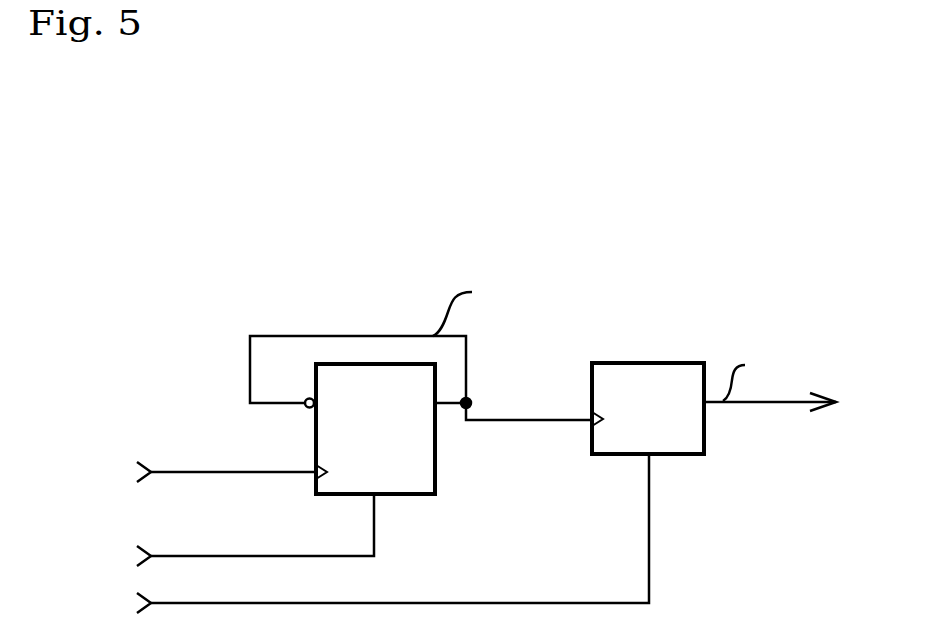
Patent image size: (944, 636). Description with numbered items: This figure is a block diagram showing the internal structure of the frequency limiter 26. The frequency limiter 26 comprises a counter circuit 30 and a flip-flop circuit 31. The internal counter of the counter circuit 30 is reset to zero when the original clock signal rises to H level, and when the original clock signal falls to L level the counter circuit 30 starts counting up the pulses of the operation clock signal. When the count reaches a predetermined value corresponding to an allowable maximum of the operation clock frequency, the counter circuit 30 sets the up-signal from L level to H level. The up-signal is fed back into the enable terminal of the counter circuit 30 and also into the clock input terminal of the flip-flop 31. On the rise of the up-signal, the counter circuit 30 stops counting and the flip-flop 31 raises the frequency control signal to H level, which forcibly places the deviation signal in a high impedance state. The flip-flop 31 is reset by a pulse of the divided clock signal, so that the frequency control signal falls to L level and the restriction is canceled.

The frequency limiter 26 is at (293, 220).
The counter circuit 30 is at (348, 495).
The flip-flop circuit 31 is at (648, 363).